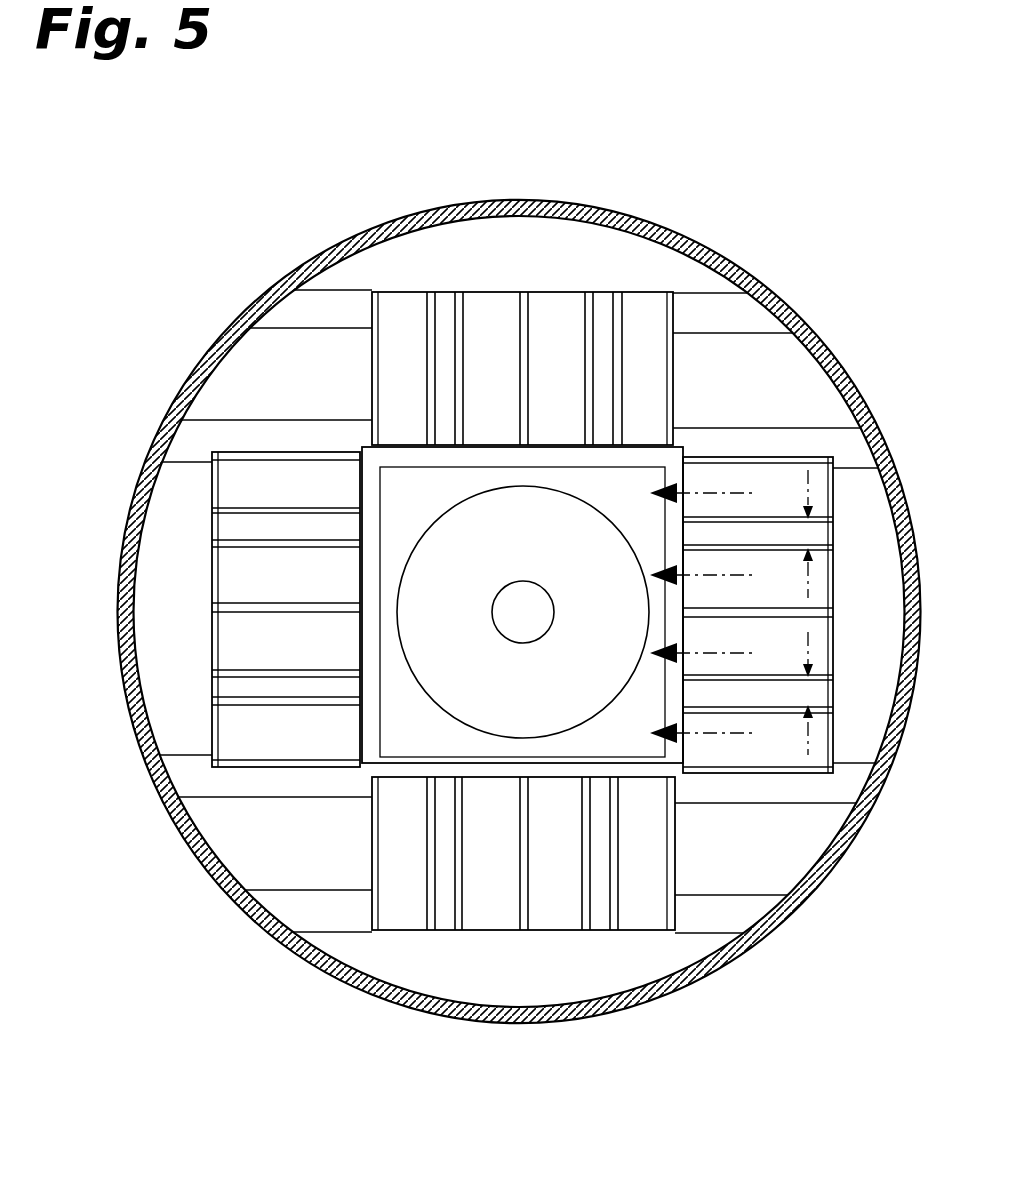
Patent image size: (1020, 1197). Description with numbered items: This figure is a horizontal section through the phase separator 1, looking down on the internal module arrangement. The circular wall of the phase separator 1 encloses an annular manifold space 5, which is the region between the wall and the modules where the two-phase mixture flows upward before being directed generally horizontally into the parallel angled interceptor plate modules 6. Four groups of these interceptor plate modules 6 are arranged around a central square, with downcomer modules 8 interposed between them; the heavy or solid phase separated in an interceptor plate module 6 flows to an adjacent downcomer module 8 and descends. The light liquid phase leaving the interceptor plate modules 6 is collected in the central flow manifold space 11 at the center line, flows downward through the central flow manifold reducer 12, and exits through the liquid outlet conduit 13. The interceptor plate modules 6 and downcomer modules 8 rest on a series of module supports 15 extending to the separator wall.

The phase separator 1 is at (855, 382).
The annular manifold space 5 is at (534, 266).
The parallel angled interceptor plate modules 6 is at (388, 384).
The downcomer modules 8 is at (520, 616).
The central flow manifold space 11 is at (393, 511).
The central flow manifold reducer 12 is at (450, 684).
The liquid outlet conduit 13 is at (545, 594).
The module supports 15 is at (519, 611).